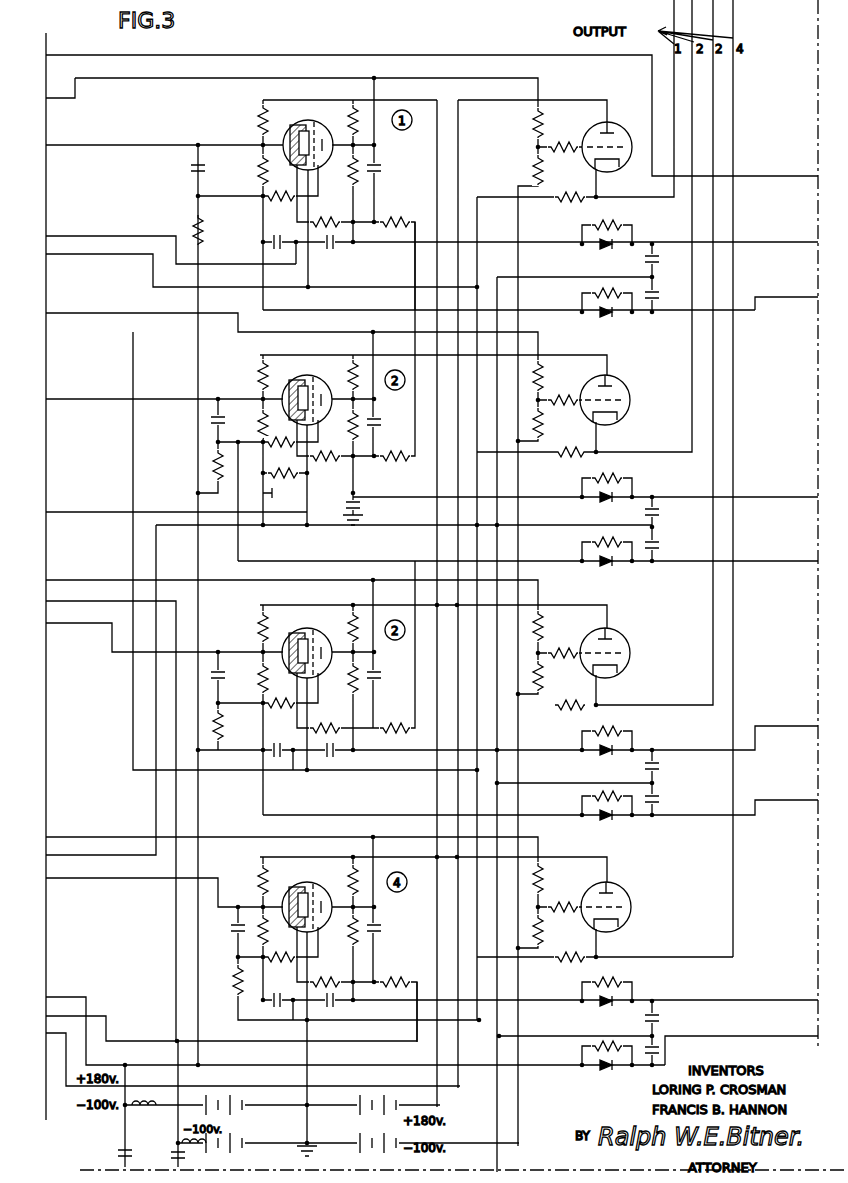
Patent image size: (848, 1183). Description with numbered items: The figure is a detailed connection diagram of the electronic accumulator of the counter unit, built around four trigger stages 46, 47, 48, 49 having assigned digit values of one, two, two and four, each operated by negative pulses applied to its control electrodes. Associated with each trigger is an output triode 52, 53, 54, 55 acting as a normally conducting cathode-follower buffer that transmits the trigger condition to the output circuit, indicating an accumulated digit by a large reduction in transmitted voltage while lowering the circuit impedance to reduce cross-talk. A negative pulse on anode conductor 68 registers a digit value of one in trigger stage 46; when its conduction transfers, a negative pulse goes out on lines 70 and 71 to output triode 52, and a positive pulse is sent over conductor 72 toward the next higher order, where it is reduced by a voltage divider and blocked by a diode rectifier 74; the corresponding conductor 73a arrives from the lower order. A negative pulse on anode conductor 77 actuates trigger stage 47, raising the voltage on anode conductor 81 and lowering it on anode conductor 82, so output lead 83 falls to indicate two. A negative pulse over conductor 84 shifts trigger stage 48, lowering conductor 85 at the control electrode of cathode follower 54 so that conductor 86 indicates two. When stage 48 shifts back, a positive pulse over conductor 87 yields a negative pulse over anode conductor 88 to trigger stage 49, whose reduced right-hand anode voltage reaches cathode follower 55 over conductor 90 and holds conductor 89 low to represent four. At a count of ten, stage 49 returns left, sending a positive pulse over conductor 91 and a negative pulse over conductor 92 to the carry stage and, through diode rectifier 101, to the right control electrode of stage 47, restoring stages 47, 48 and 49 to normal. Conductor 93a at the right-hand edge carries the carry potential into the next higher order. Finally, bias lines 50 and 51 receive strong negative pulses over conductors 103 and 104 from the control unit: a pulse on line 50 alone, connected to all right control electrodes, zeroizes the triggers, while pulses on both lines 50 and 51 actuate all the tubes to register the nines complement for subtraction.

The conductor 93a is at (96, 55).
The line 70 is at (214, 80).
The line 71 is at (440, 78).
The conductor 72 is at (138, 145).
The anode conductor 68 is at (126, 236).
The bias line 50 is at (206, 256).
The bias line 51 is at (415, 278).
The conductor 73a is at (772, 297).
The diode rectifier 74 is at (606, 316).
The conductor 84 is at (133, 332).
The anode conductor 82 is at (400, 332).
The anode conductor 81 is at (120, 399).
The output lead 83 is at (692, 440).
The diode rectifier 101 is at (282, 494).
The anode conductor 77 is at (98, 512).
The conductor 92 is at (190, 525).
The conductor 87 is at (308, 580).
The conductor 85 is at (410, 583).
The anode conductor 88 is at (108, 601).
The conductor 86 is at (712, 692).
The conductor 91 is at (240, 835).
The conductor 90 is at (410, 838).
The conductor 89 is at (732, 948).
The conductor 103 is at (110, 1158).
The conductor 104 is at (172, 1164).
The trigger stage 46 is at (298, 128).
The trigger stage 47 is at (298, 383).
The trigger stage 48 is at (298, 634).
The trigger stage 49 is at (298, 889).
The output triode 52 is at (620, 132).
The output triode 53 is at (620, 391).
The output triode 54 is at (628, 646).
The output triode 55 is at (626, 896).